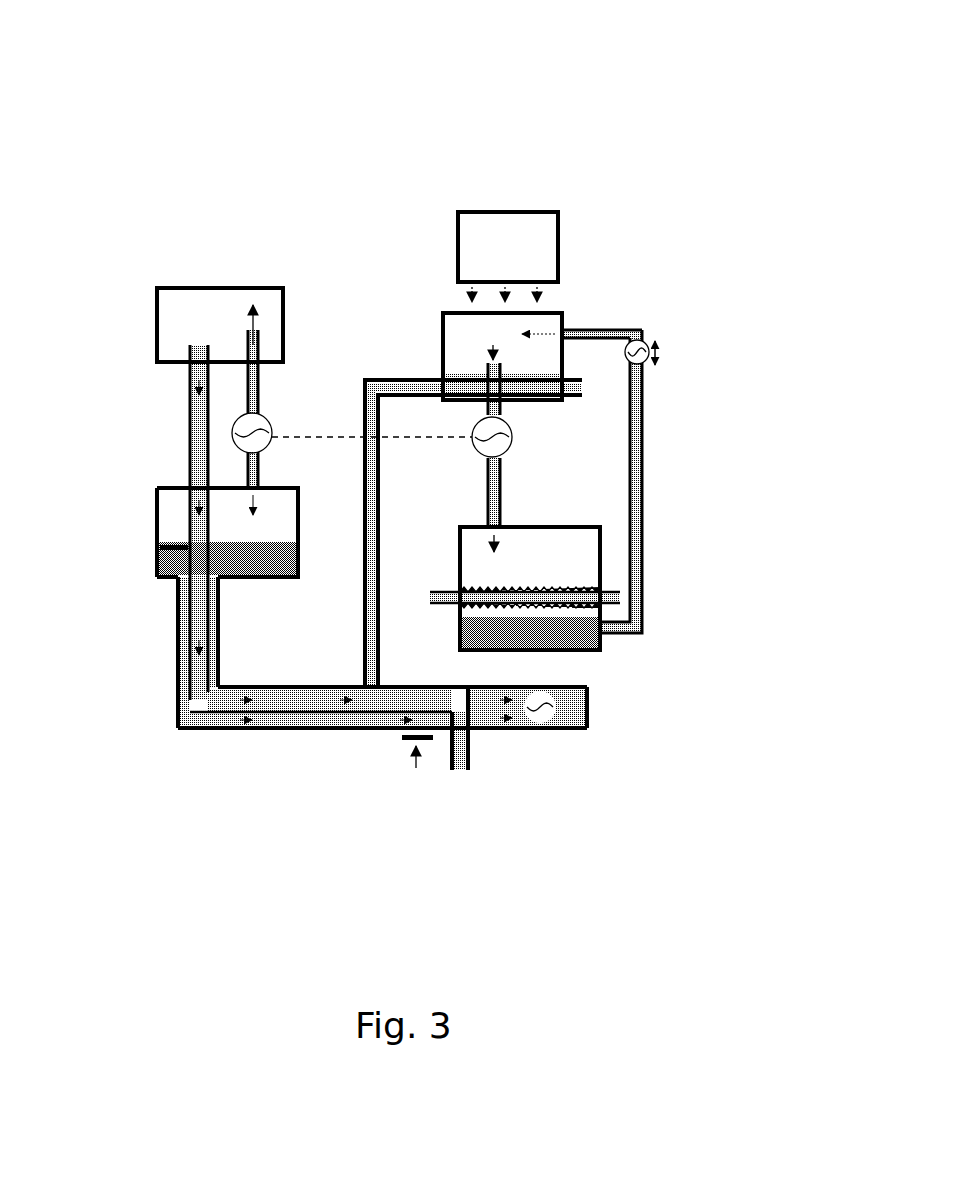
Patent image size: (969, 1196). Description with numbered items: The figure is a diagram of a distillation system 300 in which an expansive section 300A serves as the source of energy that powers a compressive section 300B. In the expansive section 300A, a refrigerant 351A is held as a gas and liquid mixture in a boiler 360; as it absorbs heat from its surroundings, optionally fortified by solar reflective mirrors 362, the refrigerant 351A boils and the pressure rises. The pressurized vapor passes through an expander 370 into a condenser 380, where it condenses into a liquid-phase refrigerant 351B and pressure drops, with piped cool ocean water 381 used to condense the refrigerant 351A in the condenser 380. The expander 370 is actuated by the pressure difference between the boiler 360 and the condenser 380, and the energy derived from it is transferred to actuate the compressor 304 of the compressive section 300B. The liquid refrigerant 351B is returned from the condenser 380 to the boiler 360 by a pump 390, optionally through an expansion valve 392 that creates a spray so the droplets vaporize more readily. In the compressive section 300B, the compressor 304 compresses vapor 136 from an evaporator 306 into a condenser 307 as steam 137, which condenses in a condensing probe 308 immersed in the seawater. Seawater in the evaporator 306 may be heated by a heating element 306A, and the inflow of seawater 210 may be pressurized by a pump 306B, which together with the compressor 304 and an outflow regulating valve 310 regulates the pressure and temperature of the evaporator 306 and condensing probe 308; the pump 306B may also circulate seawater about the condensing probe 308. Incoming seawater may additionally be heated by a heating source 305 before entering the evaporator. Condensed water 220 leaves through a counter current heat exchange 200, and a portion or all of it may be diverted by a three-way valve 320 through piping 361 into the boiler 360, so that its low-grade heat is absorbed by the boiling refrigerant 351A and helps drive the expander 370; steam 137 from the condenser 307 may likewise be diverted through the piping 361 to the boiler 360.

The distillation system 300 is at (188, 146).
The expansive section 300A is at (615, 198).
The compressive section 300B is at (158, 245).
The steam 137 is at (270, 298).
The vapor 136 is at (282, 502).
The piping 361 is at (356, 376).
The refrigerant 351A is at (462, 370).
The reflective mirrors 362 is at (508, 257).
The boiler 360 is at (502, 356).
The expansion valve 392 is at (566, 333).
The pump 390 is at (612, 481).
The compressor 304 is at (262, 440).
The expander 370 is at (504, 448).
The evaporator 306 is at (268, 549).
The heating element 306A is at (163, 540).
The condenser 307 is at (178, 558).
The condensing probe 308 is at (202, 628).
The condenser 380 is at (565, 592).
The piped cool ocean water 381 is at (612, 588).
The outflow regulating valve 310 is at (292, 692).
The 3-way valve 320 is at (362, 692).
The refrigerant 351B is at (480, 632).
The inflow of seawater 210 is at (507, 700).
The condensed water 220 is at (190, 697).
The counter current heat exchange 200 is at (310, 731).
The heating source 305 is at (418, 768).
The pump 306B is at (550, 714).